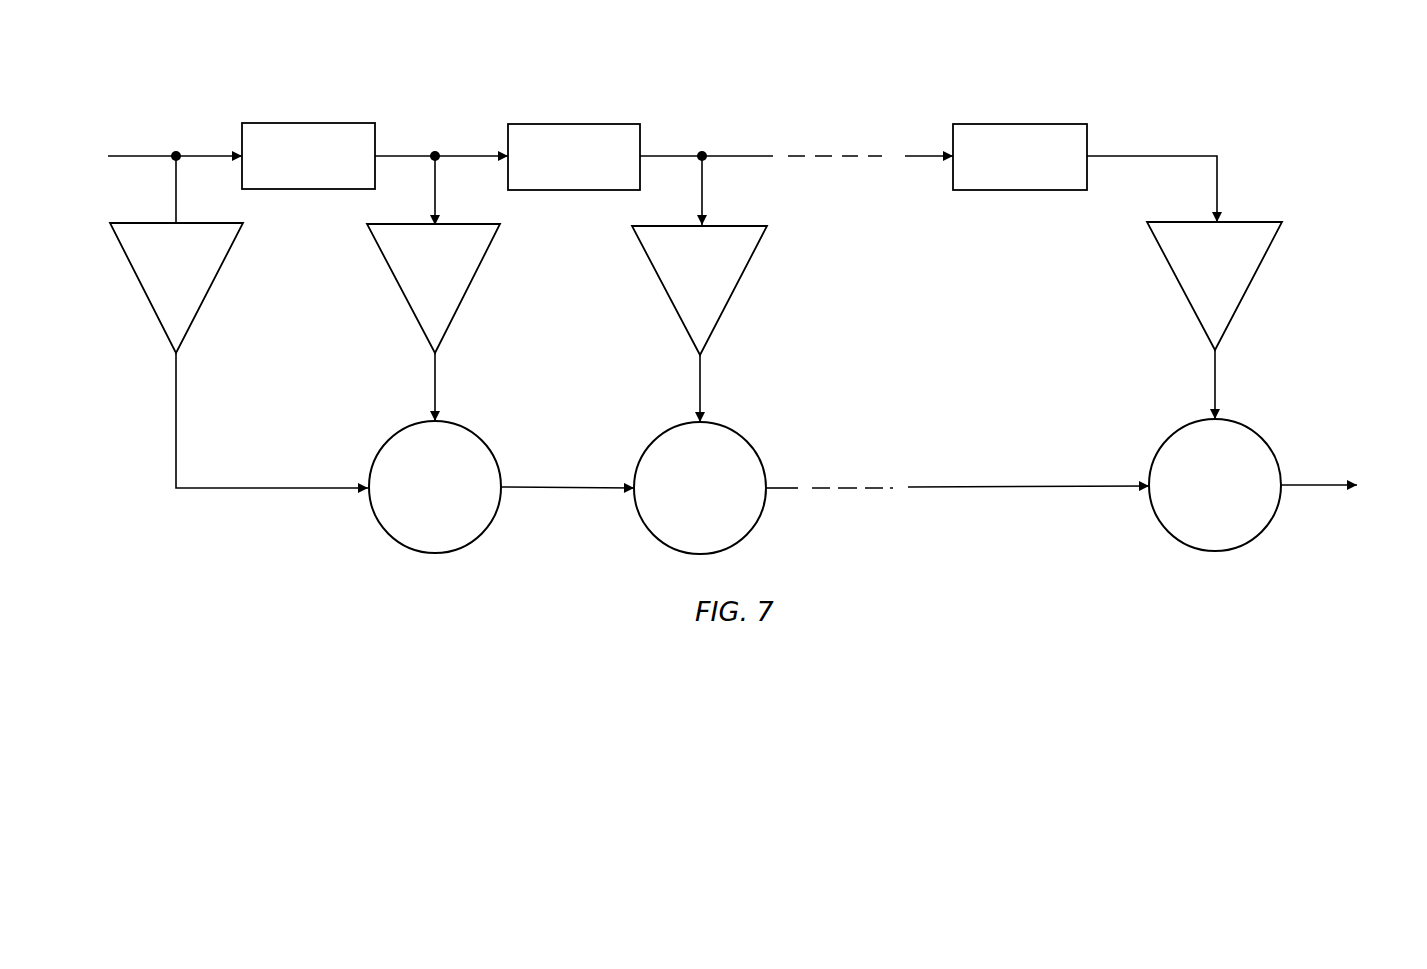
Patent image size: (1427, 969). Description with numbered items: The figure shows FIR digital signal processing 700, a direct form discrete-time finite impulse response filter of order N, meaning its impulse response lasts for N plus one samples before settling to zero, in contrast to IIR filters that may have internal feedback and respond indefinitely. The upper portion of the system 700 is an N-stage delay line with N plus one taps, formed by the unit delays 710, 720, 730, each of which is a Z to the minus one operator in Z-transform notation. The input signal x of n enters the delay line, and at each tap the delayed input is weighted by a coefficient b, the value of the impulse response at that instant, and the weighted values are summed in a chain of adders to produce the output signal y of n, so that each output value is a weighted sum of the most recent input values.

The FIR digital signal processing 700 is at (180, 60).
The unit delay 710 is at (350, 123).
The unit delay 720 is at (615, 124).
The unit delay 730 is at (1062, 124).